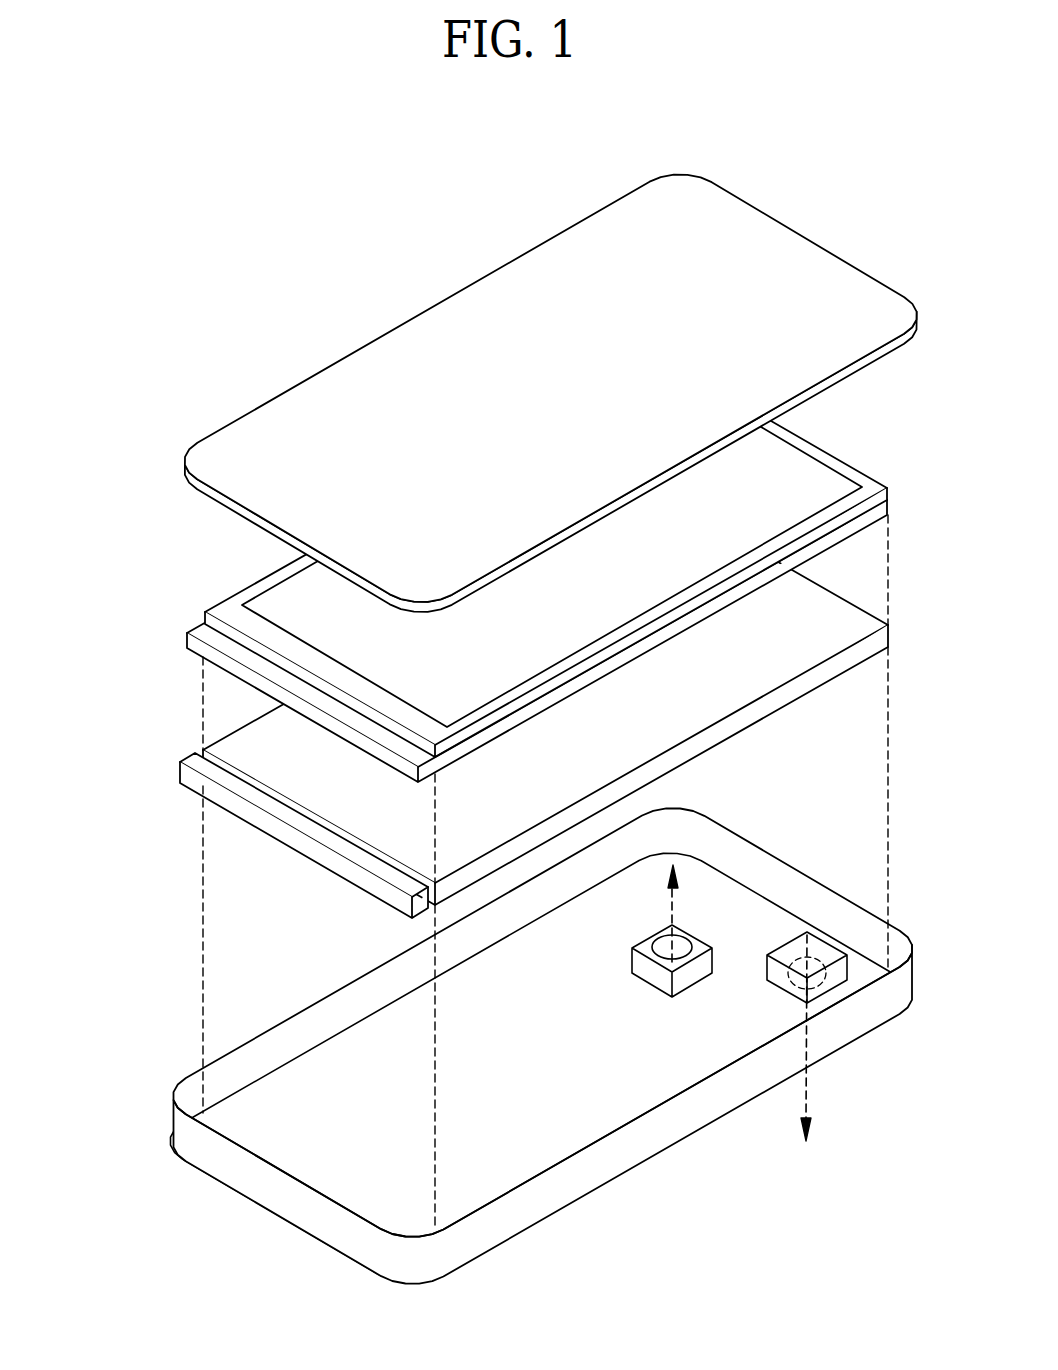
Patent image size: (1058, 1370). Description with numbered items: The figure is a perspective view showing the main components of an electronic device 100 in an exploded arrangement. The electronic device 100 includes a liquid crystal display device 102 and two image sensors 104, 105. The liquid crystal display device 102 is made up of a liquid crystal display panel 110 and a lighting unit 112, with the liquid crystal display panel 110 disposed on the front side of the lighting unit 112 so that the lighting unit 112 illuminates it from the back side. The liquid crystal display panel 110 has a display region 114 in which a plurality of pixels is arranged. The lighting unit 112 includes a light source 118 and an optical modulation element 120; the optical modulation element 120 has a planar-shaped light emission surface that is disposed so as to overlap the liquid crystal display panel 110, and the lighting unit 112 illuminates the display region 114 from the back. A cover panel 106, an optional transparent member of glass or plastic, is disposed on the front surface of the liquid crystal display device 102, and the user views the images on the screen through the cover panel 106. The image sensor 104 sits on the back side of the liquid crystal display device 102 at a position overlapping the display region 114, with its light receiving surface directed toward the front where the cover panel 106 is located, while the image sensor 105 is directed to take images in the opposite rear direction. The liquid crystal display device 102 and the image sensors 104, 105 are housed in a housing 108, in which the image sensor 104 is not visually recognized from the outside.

The electronic device 100 is at (425, 250).
The liquid crystal display device 102 is at (539, 568).
The image sensor 104 is at (633, 965).
The image sensor 105 is at (767, 970).
The cover panel 106 is at (322, 360).
The housing 108 is at (322, 1004).
The liquid crystal display panel 110 is at (500, 556).
The lighting unit 112 is at (466, 705).
The display region 114 is at (295, 585).
The light source 118 is at (194, 755).
The optical modulation element 120 is at (235, 728).